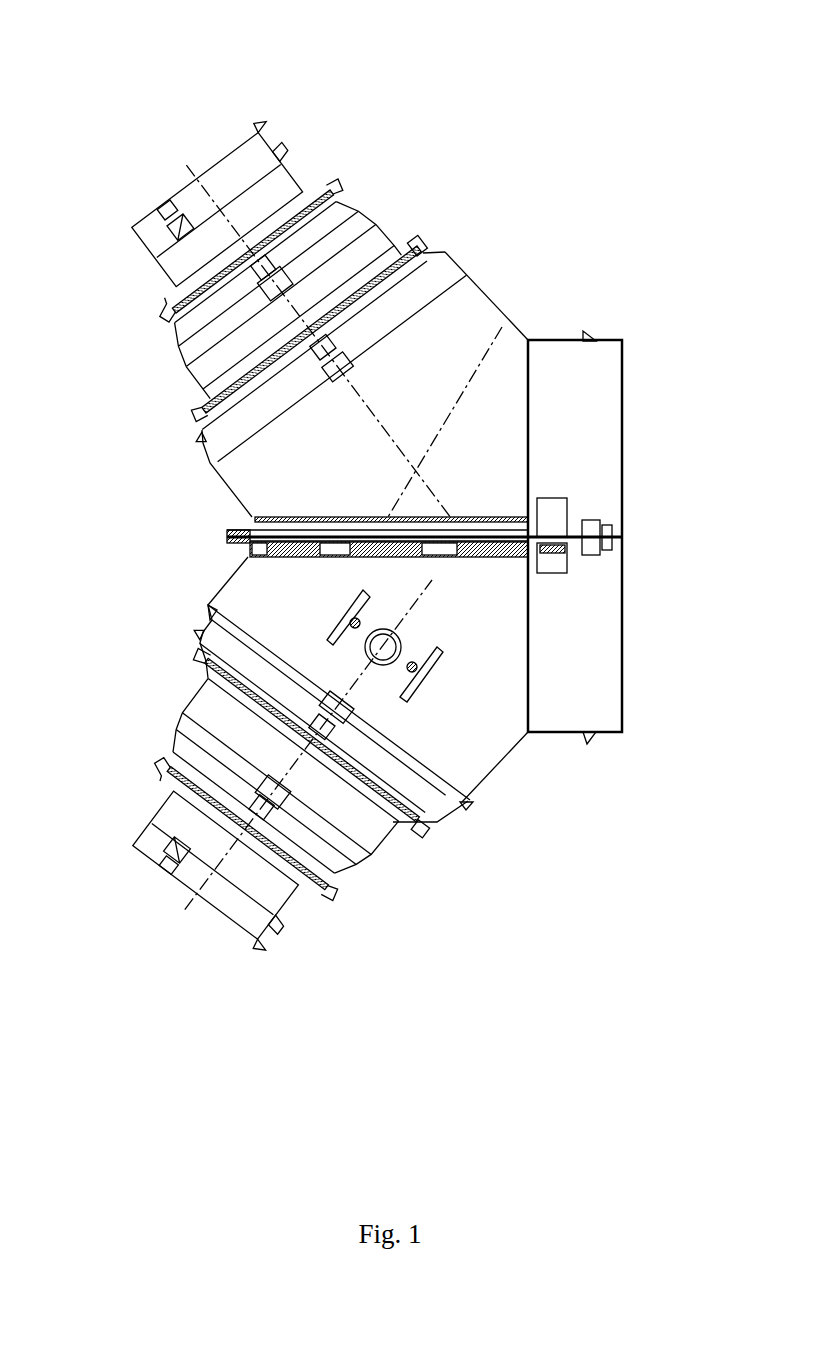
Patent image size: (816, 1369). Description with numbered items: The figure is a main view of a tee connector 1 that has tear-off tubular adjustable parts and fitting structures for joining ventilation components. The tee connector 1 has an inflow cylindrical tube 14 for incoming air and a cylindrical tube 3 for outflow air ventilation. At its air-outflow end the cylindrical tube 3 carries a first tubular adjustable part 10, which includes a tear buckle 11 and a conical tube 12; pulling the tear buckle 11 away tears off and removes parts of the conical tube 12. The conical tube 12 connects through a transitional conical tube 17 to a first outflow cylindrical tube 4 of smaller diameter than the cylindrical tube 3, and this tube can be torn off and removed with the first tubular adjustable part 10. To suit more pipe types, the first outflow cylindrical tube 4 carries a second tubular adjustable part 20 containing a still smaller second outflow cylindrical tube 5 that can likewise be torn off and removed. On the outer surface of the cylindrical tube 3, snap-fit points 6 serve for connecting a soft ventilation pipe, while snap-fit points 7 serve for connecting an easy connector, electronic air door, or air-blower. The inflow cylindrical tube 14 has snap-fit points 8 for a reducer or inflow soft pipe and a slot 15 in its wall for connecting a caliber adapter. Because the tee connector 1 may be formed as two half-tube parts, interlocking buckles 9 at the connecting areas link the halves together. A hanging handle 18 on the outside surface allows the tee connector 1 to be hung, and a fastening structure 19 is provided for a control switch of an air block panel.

The tee connector 1 is at (470, 325).
The cylindrical tube 3 is at (477, 753).
The first outflow cylindrical tube 4 is at (377, 238).
The second outflow cylindrical tube 5 is at (178, 262).
The snap-fit point 6 is at (460, 800).
The snap-fit point 7 is at (435, 813).
The snap-fit point 8 is at (593, 742).
The interlocking buckle 9 is at (253, 517).
The first tubular adjustable part 10 is at (437, 255).
The tear buckle 11 is at (395, 253).
The conical tube 12 is at (418, 257).
The inflow cylindrical tube 14 is at (597, 673).
The slot 15 is at (590, 343).
The transitional conical tube 17 is at (403, 240).
The hanging handle 18 is at (227, 537).
The fastening structure 19 is at (330, 636).
The second tubular adjustable part 20 is at (163, 310).